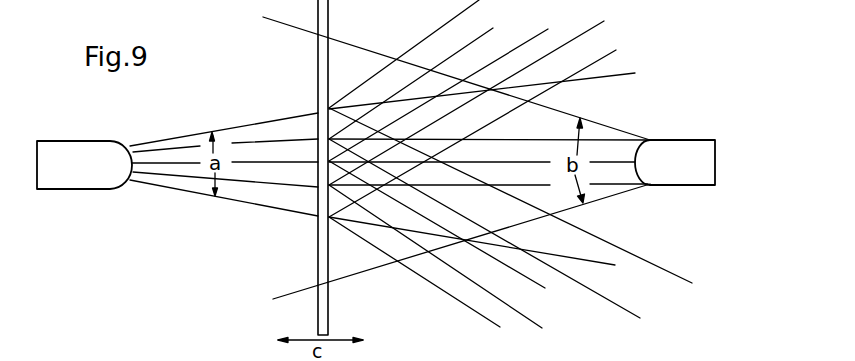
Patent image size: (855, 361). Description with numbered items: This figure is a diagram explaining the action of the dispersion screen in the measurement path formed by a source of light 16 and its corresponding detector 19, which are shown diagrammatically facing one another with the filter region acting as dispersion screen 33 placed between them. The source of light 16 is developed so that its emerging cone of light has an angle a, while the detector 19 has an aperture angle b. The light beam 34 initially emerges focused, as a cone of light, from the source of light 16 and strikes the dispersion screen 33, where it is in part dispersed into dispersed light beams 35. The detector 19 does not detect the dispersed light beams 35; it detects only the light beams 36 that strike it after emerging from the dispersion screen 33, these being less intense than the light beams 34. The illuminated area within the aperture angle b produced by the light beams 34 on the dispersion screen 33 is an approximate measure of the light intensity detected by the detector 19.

The source of light 16 is at (69, 173).
The light detector 19 is at (685, 155).
The dispersion screen 33 is at (328, 317).
The light beam 34 is at (272, 163).
The dispersed light beams 35 is at (553, 313).
The light beams 36 is at (549, 163).